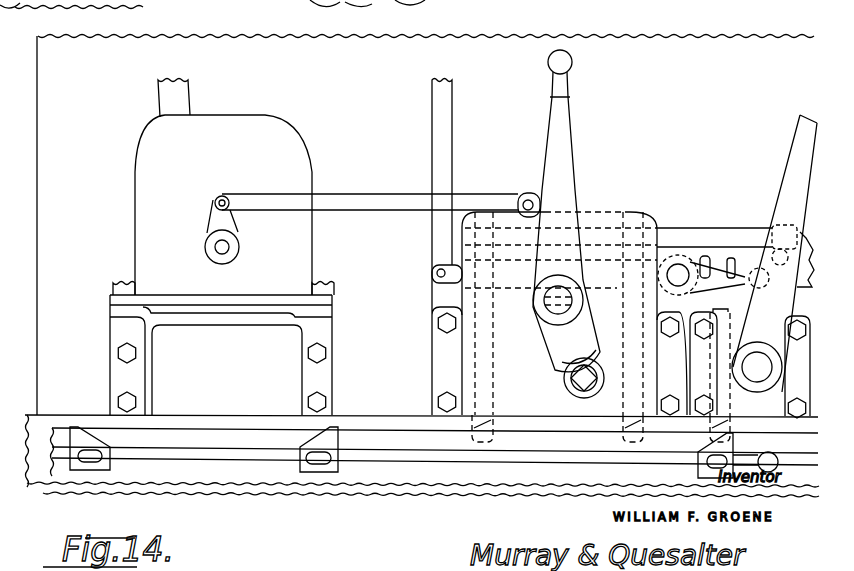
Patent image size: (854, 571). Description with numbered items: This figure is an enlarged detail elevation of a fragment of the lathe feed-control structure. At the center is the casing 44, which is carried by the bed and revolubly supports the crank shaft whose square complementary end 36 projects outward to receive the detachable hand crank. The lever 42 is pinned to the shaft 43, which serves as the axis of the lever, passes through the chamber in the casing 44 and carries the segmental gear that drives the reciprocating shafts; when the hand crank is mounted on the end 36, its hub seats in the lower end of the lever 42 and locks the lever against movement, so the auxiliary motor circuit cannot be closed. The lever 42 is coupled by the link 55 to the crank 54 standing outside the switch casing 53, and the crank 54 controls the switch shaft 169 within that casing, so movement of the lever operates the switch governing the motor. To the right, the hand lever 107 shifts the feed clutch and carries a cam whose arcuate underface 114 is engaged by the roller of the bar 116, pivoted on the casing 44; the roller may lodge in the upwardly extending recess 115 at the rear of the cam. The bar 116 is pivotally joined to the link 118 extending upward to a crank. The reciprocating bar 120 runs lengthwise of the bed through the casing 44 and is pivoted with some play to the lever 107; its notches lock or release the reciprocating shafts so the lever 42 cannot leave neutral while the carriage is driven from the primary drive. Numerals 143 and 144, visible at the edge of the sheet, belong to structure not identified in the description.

The complementary end 36 is at (586, 385).
The lever 42 is at (563, 58).
The shaft 43 is at (553, 310).
The casing 44 is at (597, 215).
The casing 53 is at (143, 157).
The crank 54 is at (233, 231).
The link 55 is at (380, 211).
The hand lever 107 is at (790, 150).
The arcuate underface 114 is at (731, 257).
The recess 115 is at (750, 284).
The bar 116 is at (708, 254).
The link 118 is at (447, 150).
The reciprocating bar 120 is at (667, 222).
The element of adjacent figure 143 is at (432, 0).
The element of adjacent figure 144 is at (372, 0).
The shaft 169 is at (207, 242).